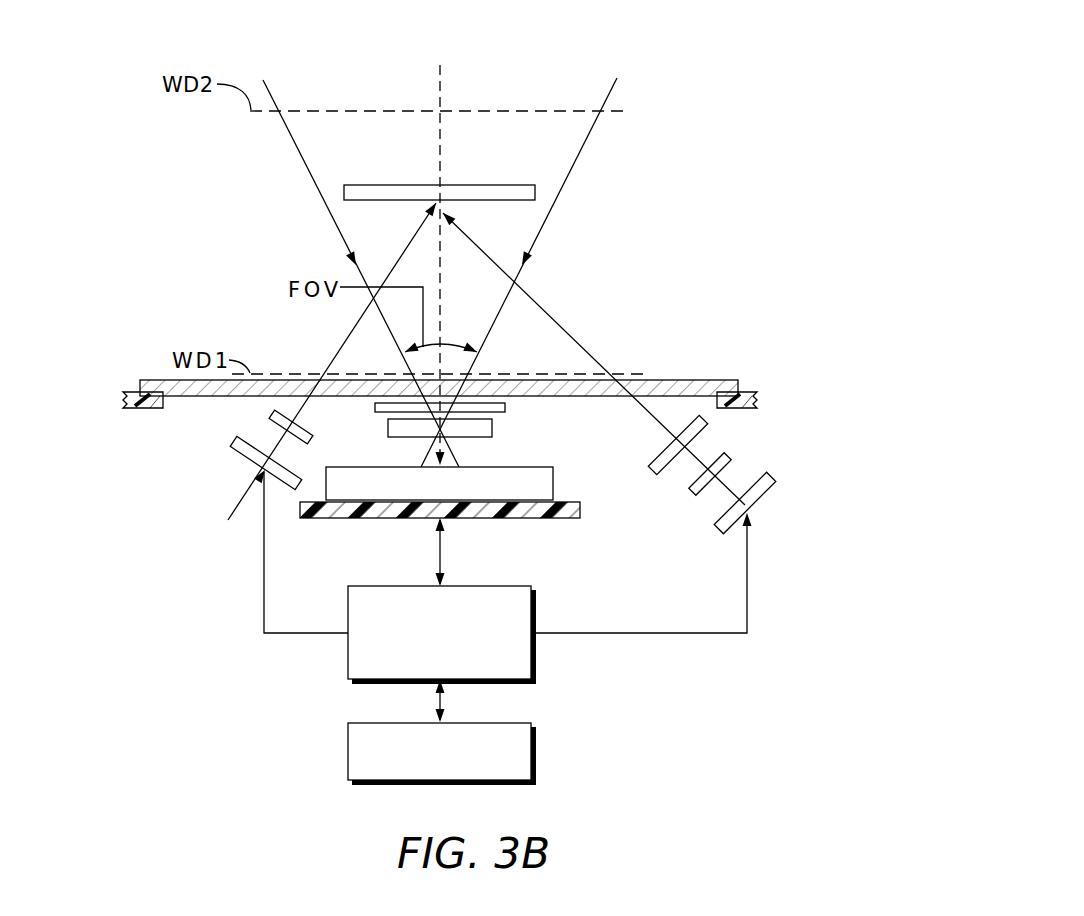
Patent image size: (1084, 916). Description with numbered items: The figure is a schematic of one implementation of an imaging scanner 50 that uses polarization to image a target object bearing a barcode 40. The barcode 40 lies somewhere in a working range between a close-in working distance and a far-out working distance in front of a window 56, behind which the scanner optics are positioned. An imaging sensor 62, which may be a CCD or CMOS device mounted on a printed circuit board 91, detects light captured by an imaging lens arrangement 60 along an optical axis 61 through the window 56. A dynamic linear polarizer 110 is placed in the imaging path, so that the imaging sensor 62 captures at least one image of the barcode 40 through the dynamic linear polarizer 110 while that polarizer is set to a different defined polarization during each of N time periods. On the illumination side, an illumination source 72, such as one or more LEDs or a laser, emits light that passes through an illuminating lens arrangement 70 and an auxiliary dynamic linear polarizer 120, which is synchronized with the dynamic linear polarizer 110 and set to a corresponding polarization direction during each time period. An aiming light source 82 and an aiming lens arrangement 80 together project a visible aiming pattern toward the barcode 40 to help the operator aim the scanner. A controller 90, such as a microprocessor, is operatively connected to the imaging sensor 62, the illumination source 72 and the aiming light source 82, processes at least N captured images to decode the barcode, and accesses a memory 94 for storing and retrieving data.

The imaging scanner 50 is at (133, 45).
The optical axis 61 is at (440, 90).
The barcode 40 is at (500, 185).
The window 56 is at (155, 380).
The imaging lens arrangement 60 is at (388, 428).
The imaging sensor 62 is at (544, 504).
The illuminating lens arrangement 70 is at (728, 457).
The illumination source 72 is at (887, 632).
The aiming lens arrangement 80 is at (100, 228).
The aiming light source 82 is at (255, 460).
The controller 90 is at (384, 586).
The printed circuit board 91 is at (480, 518).
The memory 94 is at (518, 723).
The dynamic linear polarizer 110 is at (505, 407).
The auxiliary dynamic linear polarizer 120 is at (691, 424).